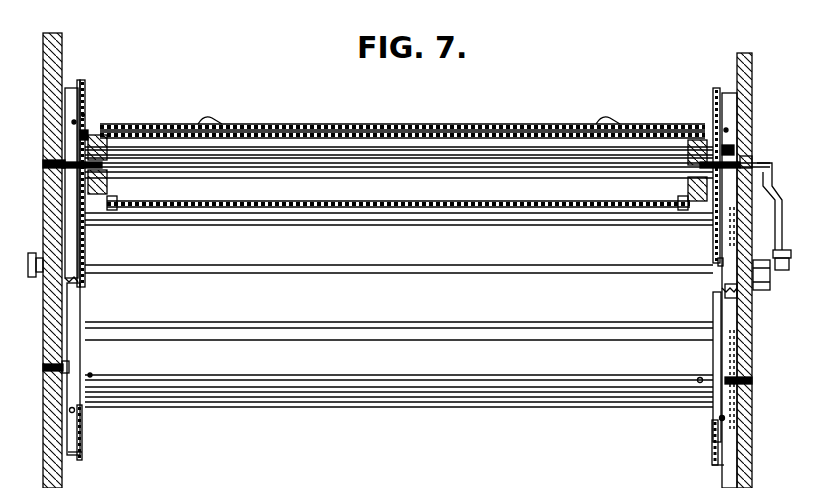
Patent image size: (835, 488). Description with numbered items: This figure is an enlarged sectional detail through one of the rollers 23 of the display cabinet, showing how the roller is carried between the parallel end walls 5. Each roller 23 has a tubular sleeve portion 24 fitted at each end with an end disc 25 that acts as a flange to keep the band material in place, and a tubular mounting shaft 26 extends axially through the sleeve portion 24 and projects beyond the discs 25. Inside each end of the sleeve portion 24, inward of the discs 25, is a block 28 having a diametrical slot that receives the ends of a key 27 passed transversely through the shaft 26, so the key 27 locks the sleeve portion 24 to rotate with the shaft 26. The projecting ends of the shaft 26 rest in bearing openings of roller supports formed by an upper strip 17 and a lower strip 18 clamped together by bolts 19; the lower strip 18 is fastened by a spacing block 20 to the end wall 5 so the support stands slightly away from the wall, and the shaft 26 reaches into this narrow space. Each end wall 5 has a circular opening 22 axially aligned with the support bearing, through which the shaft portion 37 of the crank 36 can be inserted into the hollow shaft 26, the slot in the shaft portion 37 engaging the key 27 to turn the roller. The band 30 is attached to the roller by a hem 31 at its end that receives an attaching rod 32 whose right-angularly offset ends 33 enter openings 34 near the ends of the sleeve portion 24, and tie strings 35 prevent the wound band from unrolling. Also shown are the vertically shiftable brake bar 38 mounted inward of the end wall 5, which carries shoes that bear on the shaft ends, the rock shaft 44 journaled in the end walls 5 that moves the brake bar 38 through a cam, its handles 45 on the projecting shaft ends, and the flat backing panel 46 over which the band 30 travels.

The end wall 5 is at (43, 435).
The upper strip 17 is at (72, 312).
The lower strip 18 is at (85, 82).
The bolt 19 is at (85, 116).
The spacing block 20 is at (70, 88).
The circular opening 22 is at (48, 164).
The roller 23 is at (245, 408).
The tubular sleeve portion 24 is at (400, 206).
The end disc 25 is at (85, 100).
The tubular mounting shaft 26 is at (300, 166).
The key 27 is at (45, 188).
The block 28 is at (116, 200).
The band 30 is at (498, 207).
The hem 31 is at (460, 124).
The attaching rod 32 is at (265, 122).
The offset end 33 is at (82, 138).
The opening 34 is at (96, 132).
The tie string 35 is at (212, 120).
The crank 36 is at (777, 197).
The shaft portion 37 is at (752, 160).
The brake bar 38 is at (740, 292).
The rock shaft 44 is at (560, 272).
The handle 45 is at (33, 278).
The backing panel 46 is at (248, 226).